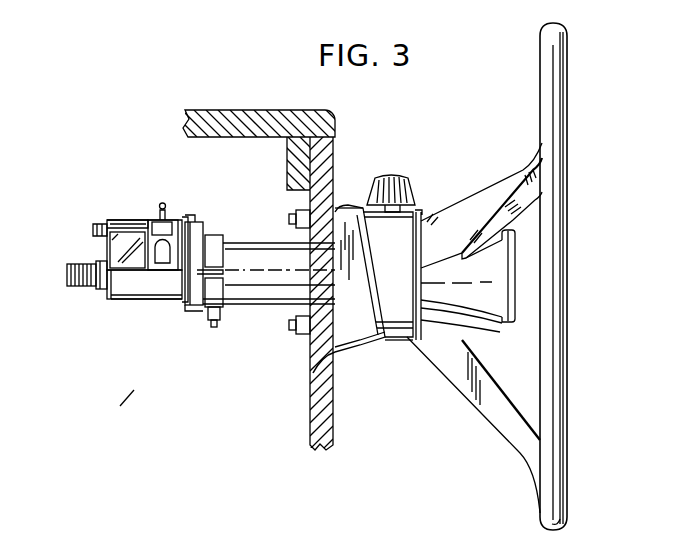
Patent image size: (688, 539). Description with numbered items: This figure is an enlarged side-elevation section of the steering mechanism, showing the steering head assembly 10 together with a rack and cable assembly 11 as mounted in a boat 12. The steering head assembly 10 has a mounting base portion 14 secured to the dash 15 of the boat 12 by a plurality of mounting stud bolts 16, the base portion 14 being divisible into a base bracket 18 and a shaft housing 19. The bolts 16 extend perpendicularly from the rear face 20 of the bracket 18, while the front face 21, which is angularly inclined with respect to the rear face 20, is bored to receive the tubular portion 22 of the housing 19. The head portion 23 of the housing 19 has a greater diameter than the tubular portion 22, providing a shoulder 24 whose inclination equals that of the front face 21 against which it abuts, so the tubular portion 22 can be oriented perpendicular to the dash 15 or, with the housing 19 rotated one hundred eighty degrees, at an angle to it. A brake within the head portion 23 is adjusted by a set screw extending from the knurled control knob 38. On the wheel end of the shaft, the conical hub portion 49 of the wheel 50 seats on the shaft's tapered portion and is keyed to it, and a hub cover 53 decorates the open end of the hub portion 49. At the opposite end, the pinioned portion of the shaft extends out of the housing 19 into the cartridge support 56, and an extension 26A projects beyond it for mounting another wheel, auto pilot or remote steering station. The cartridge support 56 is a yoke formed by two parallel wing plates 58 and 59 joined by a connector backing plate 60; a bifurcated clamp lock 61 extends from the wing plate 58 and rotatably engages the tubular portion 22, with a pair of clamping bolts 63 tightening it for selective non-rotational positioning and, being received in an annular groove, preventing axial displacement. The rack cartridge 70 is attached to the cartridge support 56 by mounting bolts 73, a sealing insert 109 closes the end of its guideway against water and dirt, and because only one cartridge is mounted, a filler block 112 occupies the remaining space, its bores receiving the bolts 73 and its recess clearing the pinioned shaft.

The steering head assembly 10 is at (395, 140).
The rack and cable assembly 11 is at (108, 406).
The boat 12 is at (231, 107).
The mounting base portion 14 is at (383, 360).
The dash 15 is at (328, 413).
The mounting stud bolts 16 is at (297, 327).
The base bracket 18 is at (352, 335).
The shaft housing 19 is at (402, 236).
The rear face 20 is at (313, 365).
The front face 21 is at (378, 274).
The tubular portion 22 is at (263, 247).
The head portion 23 is at (405, 336).
The shoulder 24 is at (366, 212).
The extension 26A is at (75, 284).
The knurled control knob 38 is at (398, 178).
The hub portion 49 is at (482, 322).
The wheel 50 is at (565, 518).
The hub cover 53 is at (513, 266).
The cartridge support 56 is at (165, 304).
The wing plate 58 is at (186, 247).
The wing plate 59 is at (107, 243).
The connector backing plate 60 is at (140, 272).
The bifurcated clamp lock 61 is at (197, 316).
The clamping bolts 63 is at (213, 325).
The rack cartridge 70 is at (175, 214).
The mounting bolts 73 is at (97, 228).
The sealing insert 109 is at (160, 260).
The filler block 112 is at (130, 214).